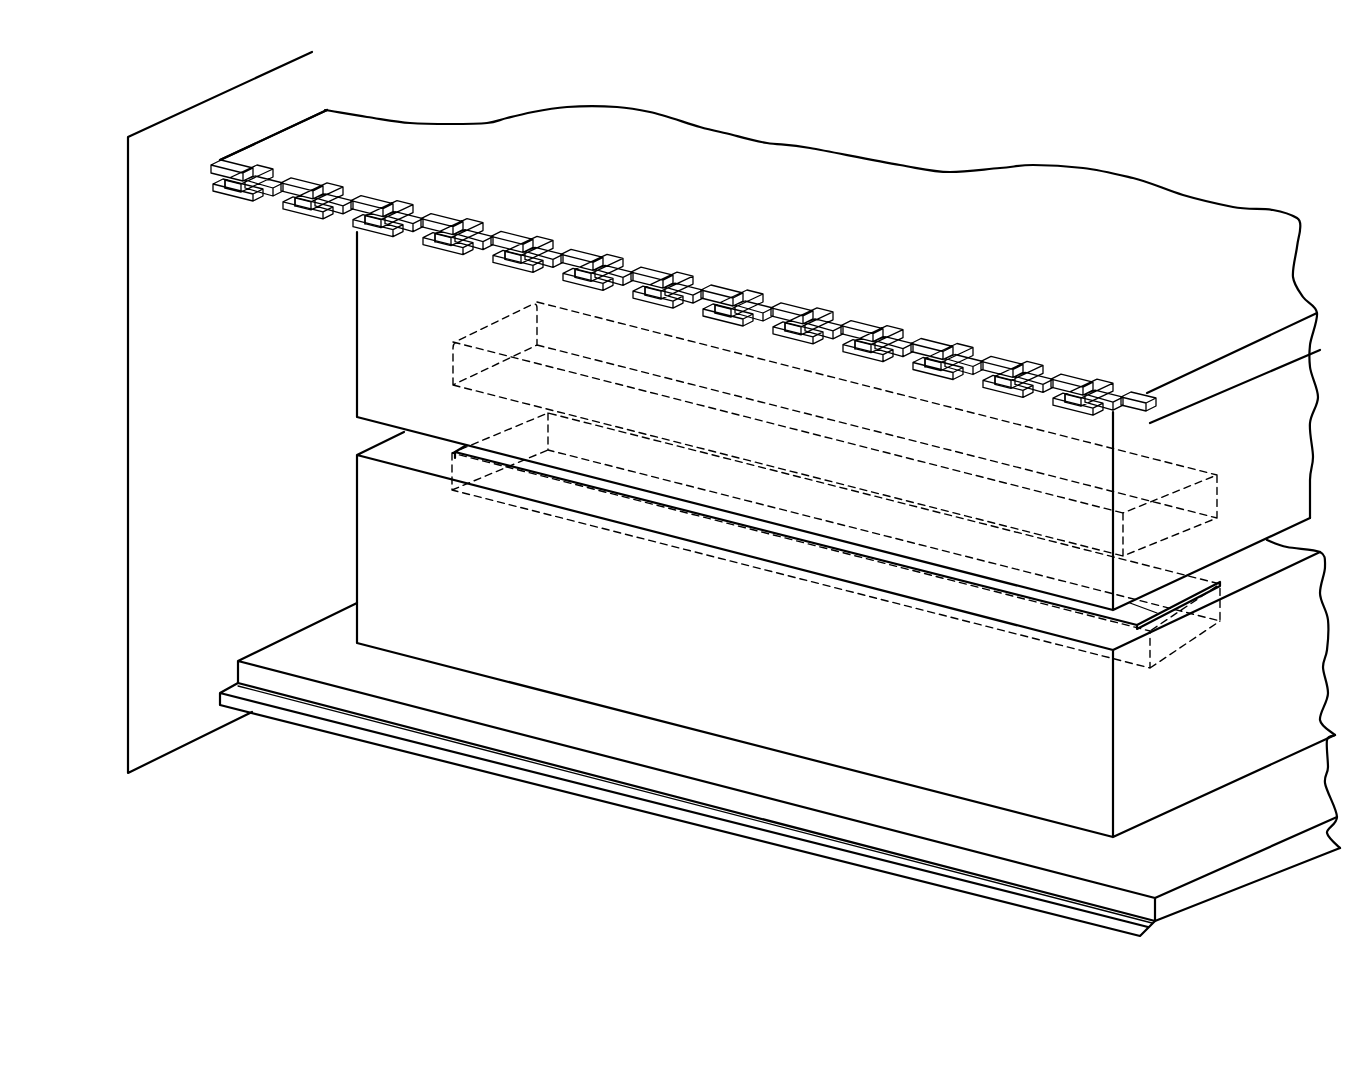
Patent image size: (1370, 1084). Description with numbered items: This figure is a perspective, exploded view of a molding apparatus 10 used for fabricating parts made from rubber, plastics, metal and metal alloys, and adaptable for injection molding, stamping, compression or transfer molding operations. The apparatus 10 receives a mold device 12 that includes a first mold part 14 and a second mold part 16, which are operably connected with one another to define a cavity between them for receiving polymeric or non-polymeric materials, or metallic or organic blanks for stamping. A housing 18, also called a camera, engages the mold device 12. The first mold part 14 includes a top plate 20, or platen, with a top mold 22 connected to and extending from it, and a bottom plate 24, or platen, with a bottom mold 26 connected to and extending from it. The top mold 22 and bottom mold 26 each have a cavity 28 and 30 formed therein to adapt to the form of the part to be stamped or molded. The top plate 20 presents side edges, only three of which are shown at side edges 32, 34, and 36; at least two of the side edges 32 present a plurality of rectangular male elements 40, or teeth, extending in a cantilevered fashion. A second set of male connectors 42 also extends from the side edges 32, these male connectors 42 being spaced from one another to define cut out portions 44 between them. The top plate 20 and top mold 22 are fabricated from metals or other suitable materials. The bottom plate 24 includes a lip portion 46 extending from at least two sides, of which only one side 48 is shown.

The molding apparatus 10 is at (573, 848).
The mold device 12 is at (1299, 455).
The first mold part 14 is at (1171, 232).
The second mold part 16 is at (766, 712).
The housing 18 is at (168, 514).
The top plate 20 is at (993, 185).
The top mold 22 is at (1272, 380).
The bottom plate 24 is at (1207, 850).
The bottom mold 26 is at (1245, 748).
The cavity 28 is at (1185, 468).
The cavity 30 is at (1200, 637).
The side edge 32 is at (1100, 372).
The side edge 34 is at (1223, 377).
The side edge 36 is at (267, 137).
The male elements 40 is at (510, 238).
The male connectors 42 is at (565, 295).
The cut out portions 44 is at (342, 220).
The lip portion 46 is at (965, 885).
The side 48 is at (905, 848).